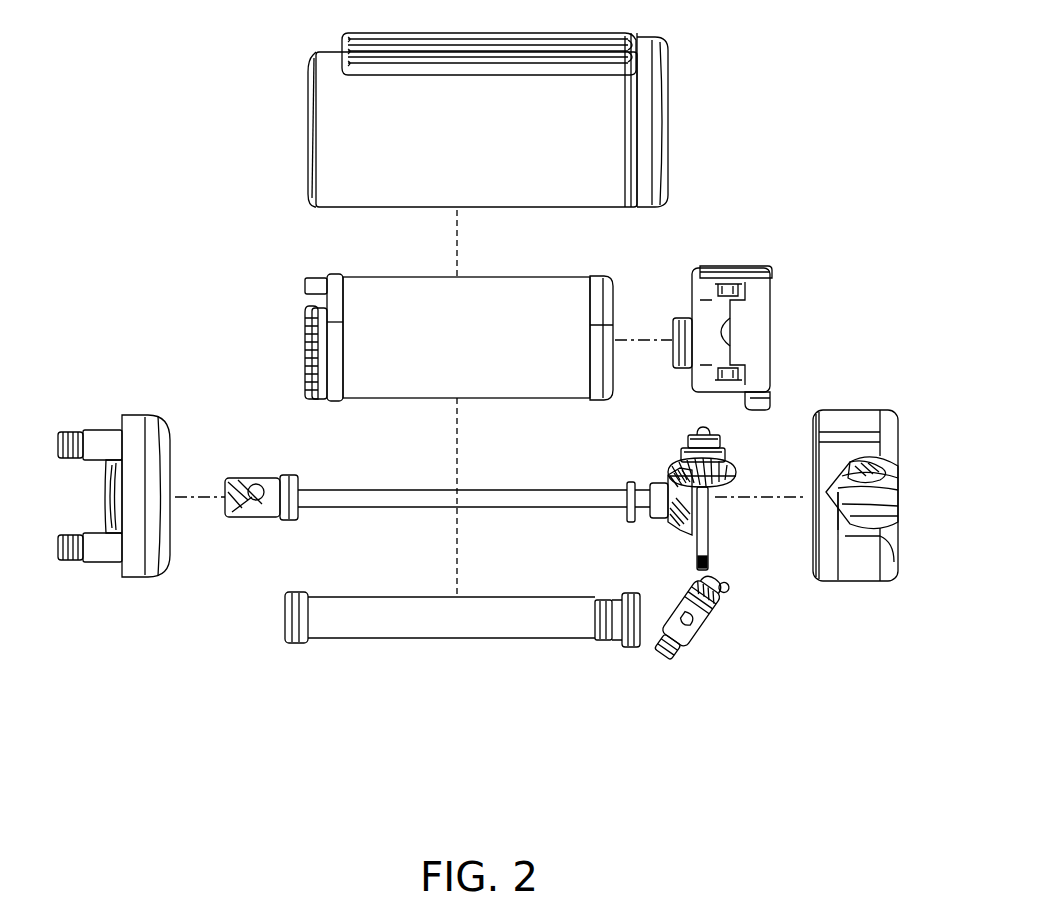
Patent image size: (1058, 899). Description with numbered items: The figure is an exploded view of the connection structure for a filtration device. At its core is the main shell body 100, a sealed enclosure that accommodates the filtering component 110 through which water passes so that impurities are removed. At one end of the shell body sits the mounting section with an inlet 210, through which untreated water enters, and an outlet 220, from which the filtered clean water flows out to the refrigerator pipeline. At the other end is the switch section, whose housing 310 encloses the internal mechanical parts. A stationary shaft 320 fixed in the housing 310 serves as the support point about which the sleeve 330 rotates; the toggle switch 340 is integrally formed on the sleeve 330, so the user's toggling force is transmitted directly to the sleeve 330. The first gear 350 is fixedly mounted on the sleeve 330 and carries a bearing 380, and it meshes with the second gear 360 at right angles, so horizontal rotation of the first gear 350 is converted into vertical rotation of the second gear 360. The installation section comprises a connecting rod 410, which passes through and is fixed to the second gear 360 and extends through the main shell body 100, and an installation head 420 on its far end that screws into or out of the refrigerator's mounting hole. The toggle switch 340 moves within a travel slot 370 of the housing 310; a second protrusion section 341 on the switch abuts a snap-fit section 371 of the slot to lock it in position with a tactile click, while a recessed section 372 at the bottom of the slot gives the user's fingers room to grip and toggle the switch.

The main shell body 100 is at (330, 65).
The filtering component 110 is at (355, 292).
The inlet 210 is at (103, 440).
The outlet 220 is at (105, 553).
The housing 310 is at (866, 498).
The stationary shaft 320 is at (700, 535).
The sleeve 330 is at (678, 647).
The toggle switch 340 is at (700, 660).
The second protrusion section 341 is at (680, 665).
The first gear 350 is at (730, 475).
The second gear 360 is at (670, 530).
The travel slot 370 is at (894, 483).
The snap-fit section 371 is at (885, 465).
The recessed section 372 is at (838, 500).
The bearing 380 is at (690, 445).
The connecting rod 410 is at (487, 500).
The installation head 420 is at (272, 485).